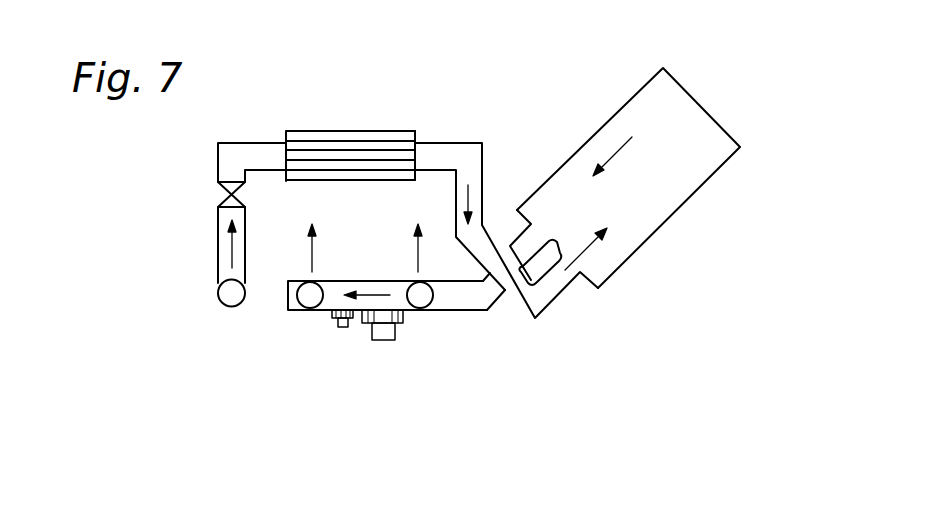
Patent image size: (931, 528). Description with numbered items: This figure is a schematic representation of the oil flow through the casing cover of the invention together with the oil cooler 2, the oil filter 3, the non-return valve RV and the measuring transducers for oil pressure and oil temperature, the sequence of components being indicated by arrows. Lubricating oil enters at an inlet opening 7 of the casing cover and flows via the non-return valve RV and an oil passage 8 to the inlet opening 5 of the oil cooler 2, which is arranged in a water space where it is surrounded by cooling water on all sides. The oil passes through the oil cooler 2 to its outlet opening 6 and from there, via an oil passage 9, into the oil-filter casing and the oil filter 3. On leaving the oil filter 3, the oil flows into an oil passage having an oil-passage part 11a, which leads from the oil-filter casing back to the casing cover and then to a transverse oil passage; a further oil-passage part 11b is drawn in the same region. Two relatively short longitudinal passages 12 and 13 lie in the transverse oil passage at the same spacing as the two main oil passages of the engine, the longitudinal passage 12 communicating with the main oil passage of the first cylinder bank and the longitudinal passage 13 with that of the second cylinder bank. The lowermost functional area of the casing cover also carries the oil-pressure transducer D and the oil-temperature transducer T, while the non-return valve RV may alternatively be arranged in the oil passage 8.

The oil cooler 2 is at (318, 136).
The oil filter 3 is at (697, 122).
The inlet opening 5 is at (282, 170).
The outlet opening 6 is at (418, 156).
The inlet opening 7 is at (226, 300).
The oil passage 8 is at (226, 158).
The oil passage 9 is at (466, 214).
The oil-passage part 11a is at (528, 247).
The air outlet nozzle 11b is at (372, 302).
The longitudinal passage 12 is at (423, 300).
The longitudinal passage 13 is at (307, 305).
The non-return valve RV is at (220, 196).
The oil-temperature transducer T is at (342, 324).
The oil-pressure transducer D is at (387, 333).